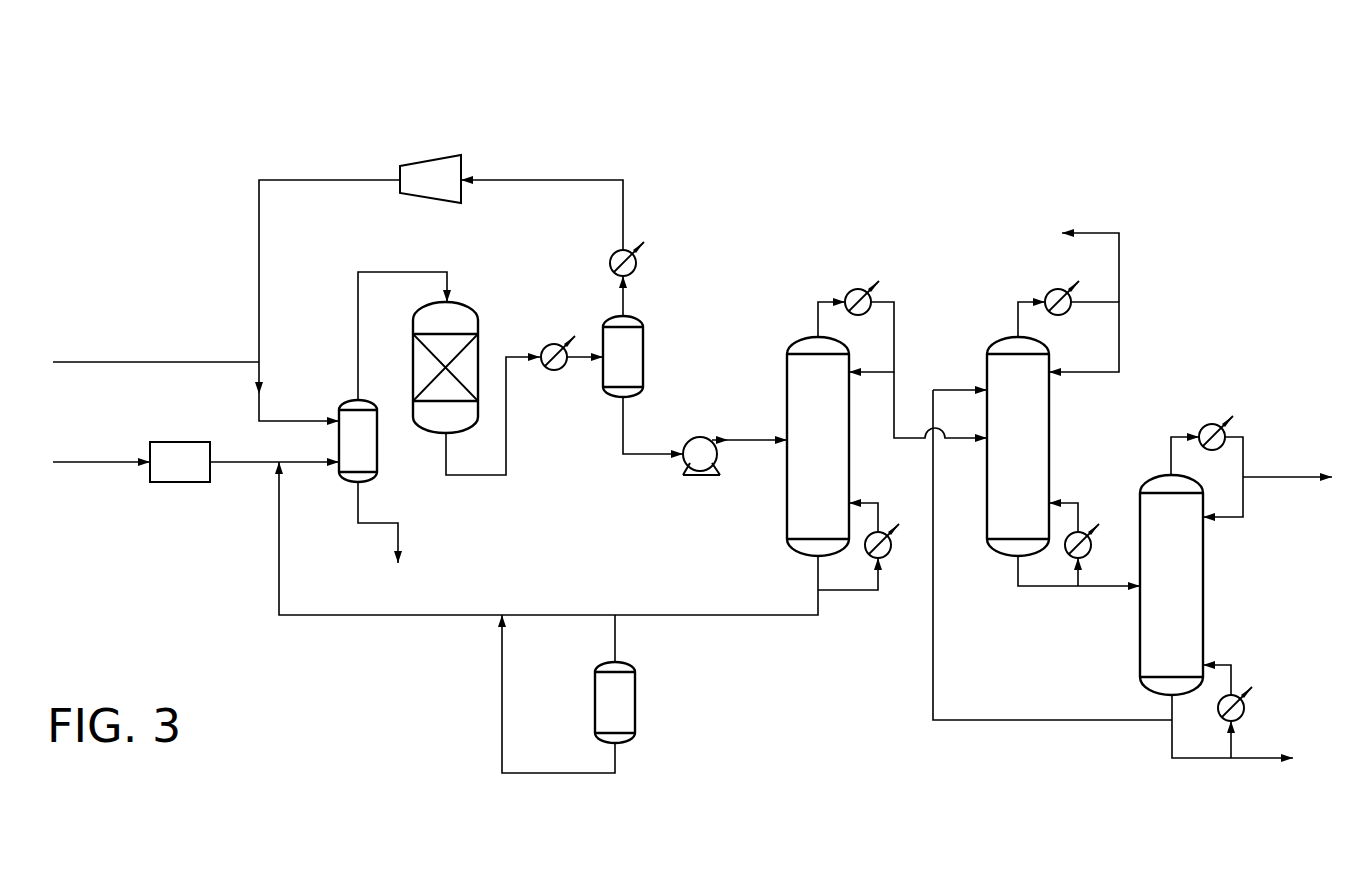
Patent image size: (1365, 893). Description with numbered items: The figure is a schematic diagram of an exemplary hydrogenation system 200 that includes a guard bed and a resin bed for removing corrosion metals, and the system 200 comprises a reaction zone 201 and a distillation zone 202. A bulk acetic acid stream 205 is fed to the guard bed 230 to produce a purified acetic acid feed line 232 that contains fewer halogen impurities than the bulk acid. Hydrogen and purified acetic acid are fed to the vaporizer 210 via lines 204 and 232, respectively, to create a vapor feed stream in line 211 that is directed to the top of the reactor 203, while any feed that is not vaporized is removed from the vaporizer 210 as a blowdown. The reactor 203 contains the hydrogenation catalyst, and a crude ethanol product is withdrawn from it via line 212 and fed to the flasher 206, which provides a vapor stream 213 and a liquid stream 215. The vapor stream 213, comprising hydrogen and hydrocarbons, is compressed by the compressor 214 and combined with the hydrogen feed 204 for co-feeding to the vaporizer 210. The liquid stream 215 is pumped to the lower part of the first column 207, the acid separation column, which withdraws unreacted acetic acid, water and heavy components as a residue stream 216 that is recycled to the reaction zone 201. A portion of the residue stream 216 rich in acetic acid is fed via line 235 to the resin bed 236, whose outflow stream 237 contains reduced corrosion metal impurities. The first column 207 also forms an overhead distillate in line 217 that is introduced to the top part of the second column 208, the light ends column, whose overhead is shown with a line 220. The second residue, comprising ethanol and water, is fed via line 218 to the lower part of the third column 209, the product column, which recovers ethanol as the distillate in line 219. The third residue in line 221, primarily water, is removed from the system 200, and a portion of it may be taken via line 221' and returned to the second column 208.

The hydrogenation system 200 is at (893, 148).
The reaction zone 201 is at (347, 733).
The distillation zone 202 is at (1085, 777).
The reactor 203 is at (463, 313).
The hydrogen feed line 204 is at (122, 362).
The bulk acetic acid stream 205 is at (88, 462).
The flasher 206 is at (627, 357).
The first column 207 is at (840, 465).
The second column 208 is at (1033, 428).
The third column 209 is at (1192, 598).
The vaporizer 210 is at (347, 412).
The vapor feed stream line 211 is at (373, 271).
The crude ethanol product line 212 is at (474, 477).
The vapor stream 213 is at (627, 302).
The compressor 214 is at (427, 172).
The liquid stream 215 is at (637, 457).
The residue stream 216 is at (792, 617).
The first distillate line 217 is at (887, 300).
The second residue line 218 is at (1047, 587).
The third column distillate line 219 is at (1298, 478).
The second column distillate line 220 is at (1120, 265).
The third residue line 221 is at (1234, 750).
The return line 221' is at (1052, 594).
The guard bed 230 is at (175, 470).
The purified acetic acid feed line 232 is at (243, 465).
The resin bed feed line 235 is at (615, 640).
The resin bed 236 is at (617, 705).
The outflow stream 237 is at (545, 773).